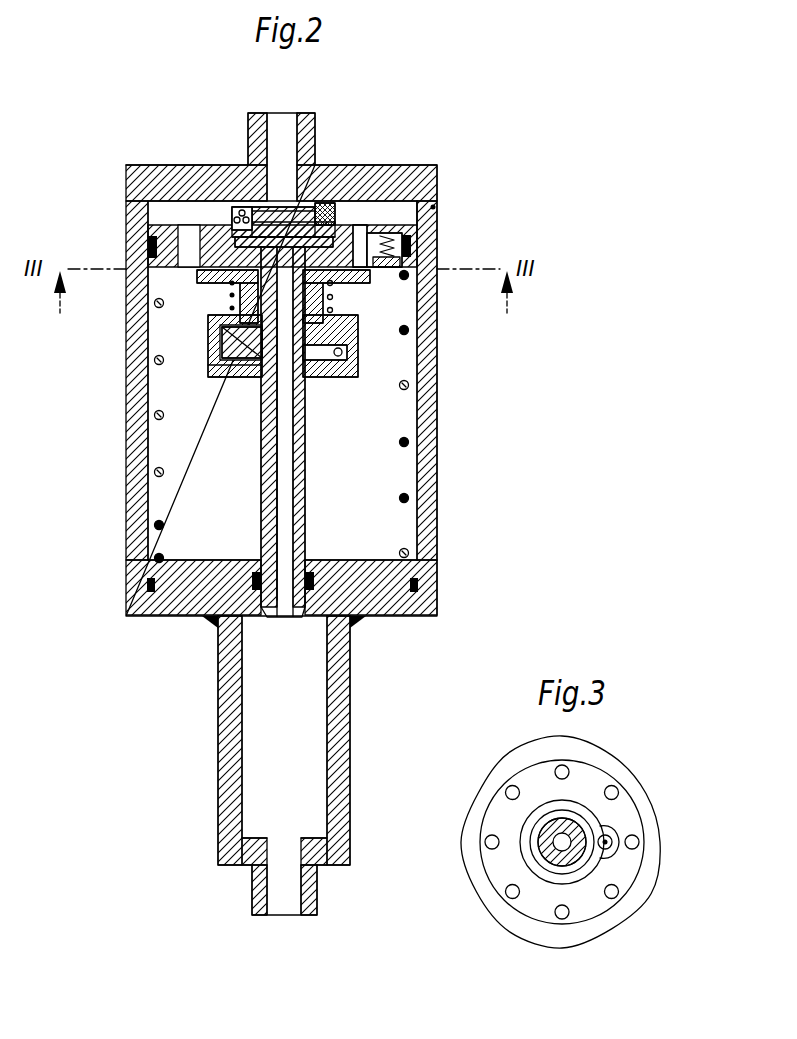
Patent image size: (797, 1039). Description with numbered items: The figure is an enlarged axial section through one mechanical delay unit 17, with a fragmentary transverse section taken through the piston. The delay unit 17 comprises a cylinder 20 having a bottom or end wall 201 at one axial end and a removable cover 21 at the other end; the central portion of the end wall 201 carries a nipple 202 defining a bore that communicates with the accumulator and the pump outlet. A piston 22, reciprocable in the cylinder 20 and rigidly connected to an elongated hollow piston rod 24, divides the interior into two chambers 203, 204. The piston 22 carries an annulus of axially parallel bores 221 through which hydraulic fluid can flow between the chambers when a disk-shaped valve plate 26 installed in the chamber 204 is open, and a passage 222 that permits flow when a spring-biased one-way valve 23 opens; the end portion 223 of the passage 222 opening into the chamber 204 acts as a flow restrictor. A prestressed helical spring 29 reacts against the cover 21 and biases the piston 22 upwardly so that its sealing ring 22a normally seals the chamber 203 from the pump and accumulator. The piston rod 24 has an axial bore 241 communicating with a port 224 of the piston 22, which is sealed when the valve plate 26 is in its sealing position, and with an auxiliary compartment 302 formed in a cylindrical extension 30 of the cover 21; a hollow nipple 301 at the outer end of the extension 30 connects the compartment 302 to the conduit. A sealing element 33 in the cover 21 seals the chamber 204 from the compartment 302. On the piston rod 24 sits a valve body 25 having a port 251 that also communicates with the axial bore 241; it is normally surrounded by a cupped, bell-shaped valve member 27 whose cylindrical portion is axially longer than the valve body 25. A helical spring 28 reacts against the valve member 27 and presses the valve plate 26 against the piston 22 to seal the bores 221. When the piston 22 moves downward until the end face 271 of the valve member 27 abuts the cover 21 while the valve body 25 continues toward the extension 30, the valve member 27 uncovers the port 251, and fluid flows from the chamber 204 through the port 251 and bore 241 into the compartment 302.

In FIG. 2, the delay unit 17 is at (530, 386).
In FIG. 2, the cylinder 20 is at (308, 365).
In FIG. 2, the end wall 201 is at (198, 182).
In FIG. 2, the nipple 202 is at (301, 113).
In FIG. 2, the chamber 203 is at (437, 190).
In FIG. 2, the chamber 204 is at (365, 541).
In FIG. 2, the cover 21 is at (387, 600).
In FIG. 2, the piston 22 is at (292, 222).
In FIG. 3, the piston 22 is at (588, 778).
In FIG. 2, the sealing ring 22a is at (326, 202).
In FIG. 2, the axially parallel bores 221 is at (358, 236).
In FIG. 3, the axially parallel bores 221 is at (511, 786).
In FIG. 2, the passage 222 is at (433, 207).
In FIG. 2, the end portion 223 is at (400, 262).
In FIG. 2, the port 224 is at (340, 273).
In FIG. 3, the port 224 is at (608, 838).
In FIG. 2, the one-way valve 23 is at (393, 230).
In FIG. 2, the piston rod 24 is at (306, 432).
In FIG. 2, the axial bore 241 is at (283, 512).
In FIG. 3, the axial bore 241 is at (553, 848).
In FIG. 2, the valve body 25 is at (247, 350).
In FIG. 2, the port 251 is at (320, 347).
In FIG. 2, the valve plate 26 is at (198, 274).
In FIG. 2, the valve member 27 is at (213, 386).
In FIG. 2, the end face 271 is at (212, 378).
In FIG. 2, the helical spring 28 is at (229, 296).
In FIG. 2, the helical spring 29 is at (164, 474).
In FIG. 2, the cylindrical extension 30 is at (268, 765).
In FIG. 2, the hollow nipple 301 is at (252, 885).
In FIG. 2, the compartment 302 is at (300, 780).
In FIG. 2, the sealing element 33 is at (253, 568).